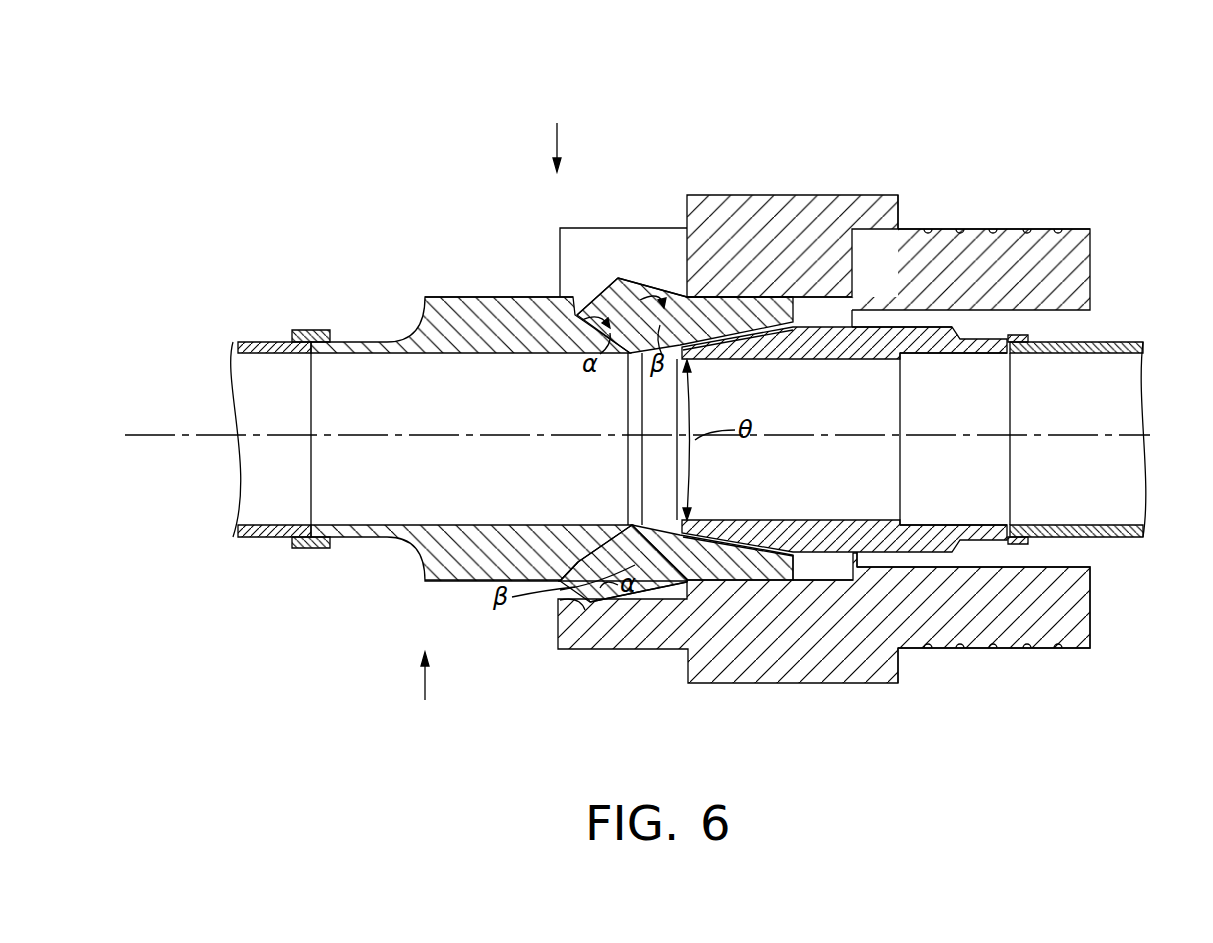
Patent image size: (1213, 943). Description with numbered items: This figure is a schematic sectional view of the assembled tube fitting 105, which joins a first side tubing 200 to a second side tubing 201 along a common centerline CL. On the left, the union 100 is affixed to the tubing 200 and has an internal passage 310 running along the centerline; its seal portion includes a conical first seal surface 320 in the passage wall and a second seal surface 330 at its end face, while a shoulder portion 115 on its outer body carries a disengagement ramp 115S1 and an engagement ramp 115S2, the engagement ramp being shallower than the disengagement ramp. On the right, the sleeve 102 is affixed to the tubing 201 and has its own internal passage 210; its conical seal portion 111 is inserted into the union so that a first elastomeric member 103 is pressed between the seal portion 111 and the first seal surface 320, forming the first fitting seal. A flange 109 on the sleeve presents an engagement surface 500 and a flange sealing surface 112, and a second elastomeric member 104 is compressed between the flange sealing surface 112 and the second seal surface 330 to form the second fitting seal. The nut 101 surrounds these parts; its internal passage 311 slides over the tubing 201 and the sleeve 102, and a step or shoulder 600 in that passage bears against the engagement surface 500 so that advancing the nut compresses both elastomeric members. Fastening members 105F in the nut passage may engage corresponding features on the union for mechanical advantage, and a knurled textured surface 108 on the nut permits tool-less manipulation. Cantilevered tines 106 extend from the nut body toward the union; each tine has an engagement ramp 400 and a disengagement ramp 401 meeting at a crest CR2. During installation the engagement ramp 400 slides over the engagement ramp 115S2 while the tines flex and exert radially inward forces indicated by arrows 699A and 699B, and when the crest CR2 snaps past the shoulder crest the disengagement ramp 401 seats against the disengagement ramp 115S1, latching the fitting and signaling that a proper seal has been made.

The tube fitting 105 is at (306, 188).
The radially inward force arrow 699B is at (553, 135).
The radially inward force arrow 699A is at (420, 690).
The shoulder portion 115 is at (617, 278).
The disengagement ramp 115S1 is at (615, 298).
The engagement ramp 115S2 is at (642, 276).
The seal portion 111 is at (763, 320).
The second seal surface 330 is at (797, 318).
The textured surface 108 is at (1040, 228).
The nut 101 is at (1037, 252).
The tine 106 is at (592, 228).
The second elastomeric member 104 is at (865, 297).
The flange 109 is at (870, 297).
The tubing 200 is at (272, 342).
The internal passage 310 is at (438, 398).
The internal passage 311 is at (1082, 323).
The centerline CL is at (1180, 432).
The first seal surface 320 is at (650, 530).
The union 100 is at (437, 548).
The engagement ramp 400 is at (565, 605).
The disengagement ramp 401 is at (627, 595).
The crest CR2 is at (630, 603).
The first elastomeric member 103 is at (722, 553).
The fastening members 105F is at (748, 583).
The shoulder 600 is at (838, 580).
The engagement surface 500 is at (900, 648).
The internal passage 210 is at (874, 463).
The tubing 201 is at (1100, 537).
The sleeve 102 is at (958, 523).
The flange sealing surface 112 is at (765, 555).